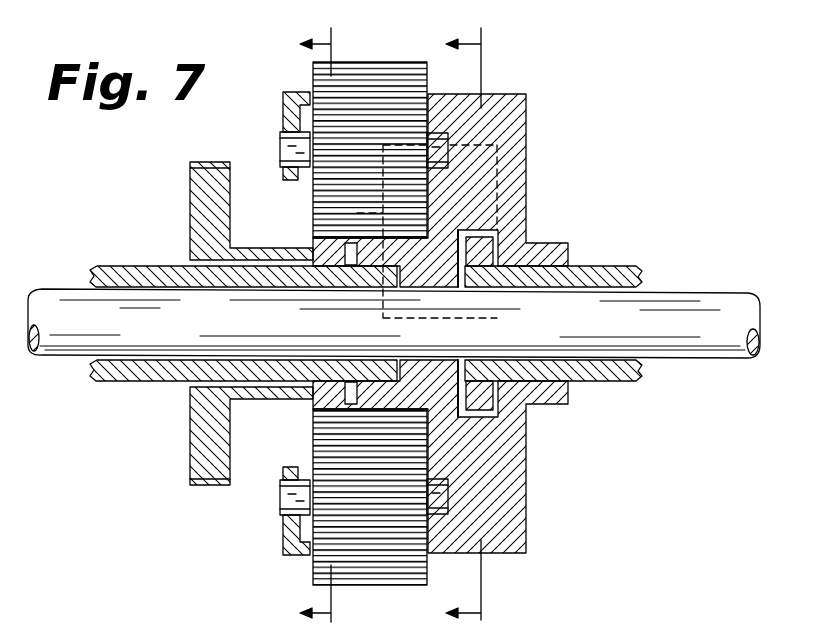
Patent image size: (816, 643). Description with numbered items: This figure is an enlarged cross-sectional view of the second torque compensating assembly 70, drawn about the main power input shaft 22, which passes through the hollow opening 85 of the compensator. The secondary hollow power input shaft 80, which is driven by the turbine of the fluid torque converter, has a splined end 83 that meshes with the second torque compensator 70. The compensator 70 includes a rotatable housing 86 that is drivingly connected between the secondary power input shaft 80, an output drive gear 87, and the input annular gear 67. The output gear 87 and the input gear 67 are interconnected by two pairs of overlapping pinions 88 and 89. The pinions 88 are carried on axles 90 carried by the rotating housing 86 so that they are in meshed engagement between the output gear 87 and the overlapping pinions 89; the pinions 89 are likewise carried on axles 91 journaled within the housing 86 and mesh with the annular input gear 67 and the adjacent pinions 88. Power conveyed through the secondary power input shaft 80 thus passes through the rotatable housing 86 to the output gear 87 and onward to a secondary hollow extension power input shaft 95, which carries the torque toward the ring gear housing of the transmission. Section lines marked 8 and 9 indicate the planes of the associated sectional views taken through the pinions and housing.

The input shaft 22 is at (710, 303).
The input annular gear 67 is at (203, 186).
The second torque compensating assembly 70 is at (180, 492).
The secondary hollow power input shaft 80 is at (131, 266).
The other end of the secondary power input shaft 83 is at (378, 362).
The hollow opening 85 is at (456, 288).
The rotatable housing 86 is at (527, 111).
The output drive gear 87 is at (478, 399).
The pinions 88 is at (528, 151).
The pinions 89 is at (377, 64).
The axles 90 is at (527, 199).
The axles 91 is at (281, 144).
The secondary hollow extension power input shaft 95 is at (622, 268).
The section line 8- 8 is at (306, 327).
The section line 9- 9 is at (447, 327).